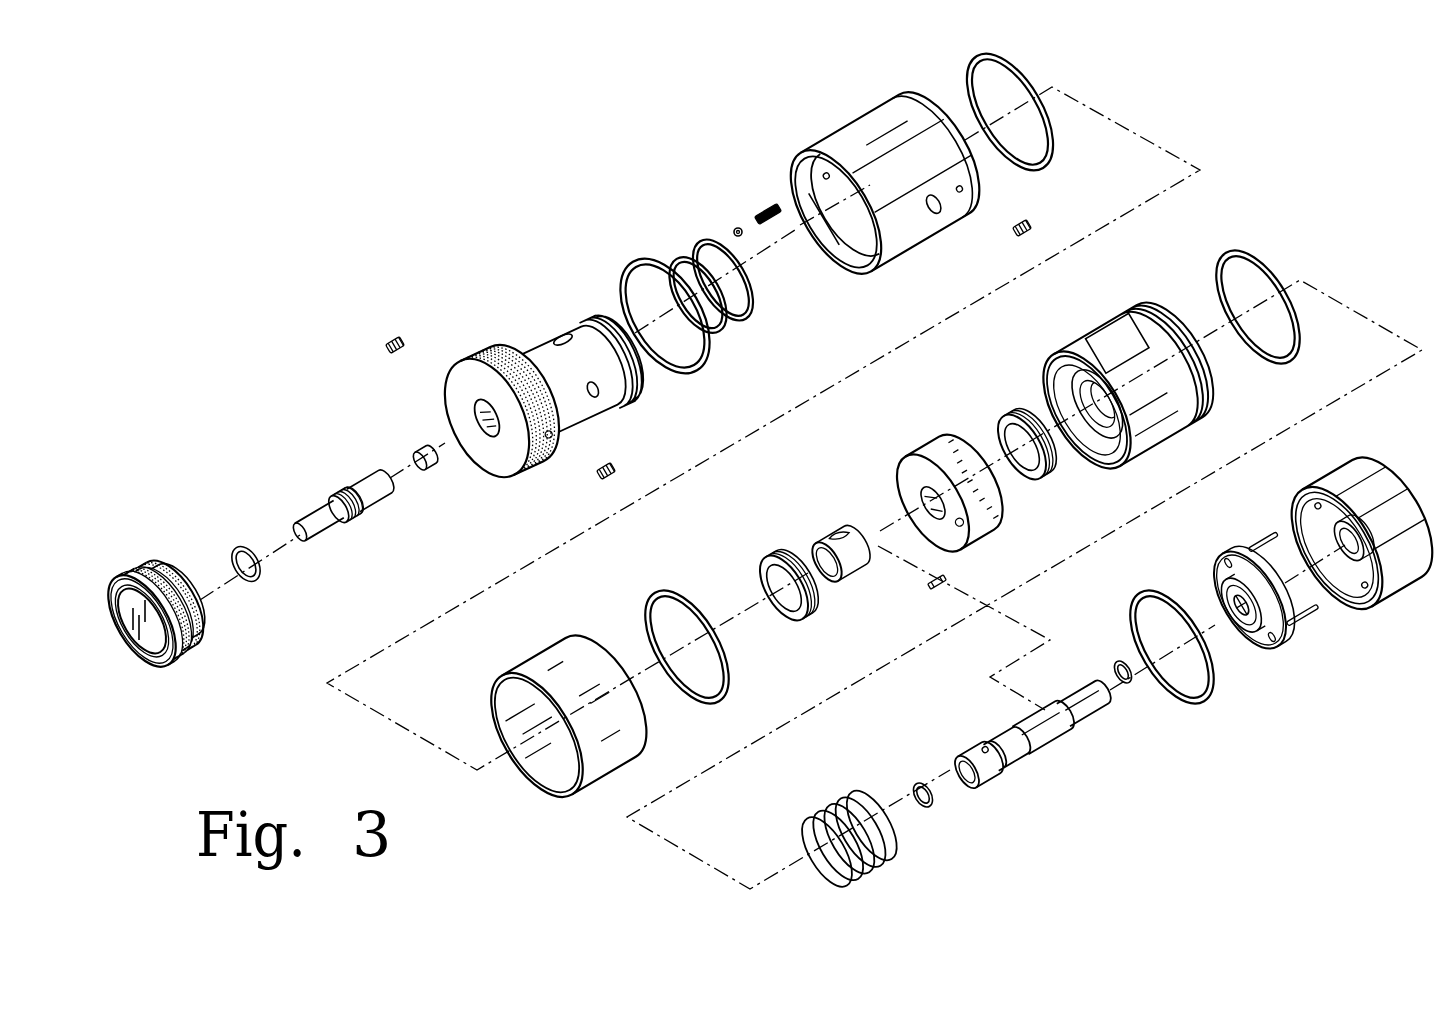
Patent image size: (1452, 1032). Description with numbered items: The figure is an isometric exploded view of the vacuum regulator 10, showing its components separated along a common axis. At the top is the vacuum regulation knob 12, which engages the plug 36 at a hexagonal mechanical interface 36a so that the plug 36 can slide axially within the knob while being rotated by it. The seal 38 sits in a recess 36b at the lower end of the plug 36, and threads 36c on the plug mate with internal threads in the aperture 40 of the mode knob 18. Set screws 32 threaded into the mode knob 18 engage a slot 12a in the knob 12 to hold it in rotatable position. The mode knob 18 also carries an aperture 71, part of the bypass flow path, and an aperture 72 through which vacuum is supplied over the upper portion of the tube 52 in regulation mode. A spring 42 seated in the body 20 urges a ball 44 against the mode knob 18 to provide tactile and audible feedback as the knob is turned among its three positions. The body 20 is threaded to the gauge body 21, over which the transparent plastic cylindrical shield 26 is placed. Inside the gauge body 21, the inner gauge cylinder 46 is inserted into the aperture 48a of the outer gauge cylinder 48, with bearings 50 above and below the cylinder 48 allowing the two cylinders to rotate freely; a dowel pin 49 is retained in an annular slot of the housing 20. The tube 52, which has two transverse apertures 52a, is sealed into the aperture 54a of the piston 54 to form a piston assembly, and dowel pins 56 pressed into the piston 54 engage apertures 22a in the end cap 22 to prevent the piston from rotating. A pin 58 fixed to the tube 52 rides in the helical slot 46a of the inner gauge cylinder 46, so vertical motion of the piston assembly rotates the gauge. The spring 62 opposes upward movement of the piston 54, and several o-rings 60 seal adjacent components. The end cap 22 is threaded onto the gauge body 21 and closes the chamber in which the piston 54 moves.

The vacuum regulator 10 is at (416, 198).
The vacuum regulation knob 12 is at (182, 624).
The slot 12a is at (205, 607).
The mode knob 18 is at (542, 406).
The body or housing 20 is at (870, 135).
The gauge body or housing 21 is at (1092, 338).
The end cap 22 is at (1362, 526).
The apertures 22a is at (1325, 497).
The transparent plastic cylindrical shield 26 is at (580, 790).
The set screws 32 is at (390, 346).
The plug 36 is at (347, 506).
The hexagonal mechanical interface 36a is at (300, 541).
The recess 36b is at (370, 470).
The threads 36c is at (343, 485).
The seal 38 is at (422, 472).
The aperture 40 is at (500, 360).
The spring 42 is at (763, 206).
The ball 44 is at (735, 228).
The inner gauge cylinder 46 is at (836, 559).
The helical slot 46a is at (835, 530).
The outer gauge cylinder 48 is at (927, 485).
The aperture 48a is at (910, 500).
The dowel pin 49 is at (962, 535).
The bearings 50 is at (802, 618).
The tube 52 is at (1025, 726).
The transverse apertures 52a is at (980, 742).
The piston 54 is at (1279, 590).
The aperture 54a is at (1237, 627).
The dowel pins 56 is at (1262, 545).
The pin 58 is at (930, 590).
The o-rings 60 is at (243, 545).
The spring 62 is at (882, 860).
The aperture 71 is at (558, 330).
The aperture 72 is at (600, 397).